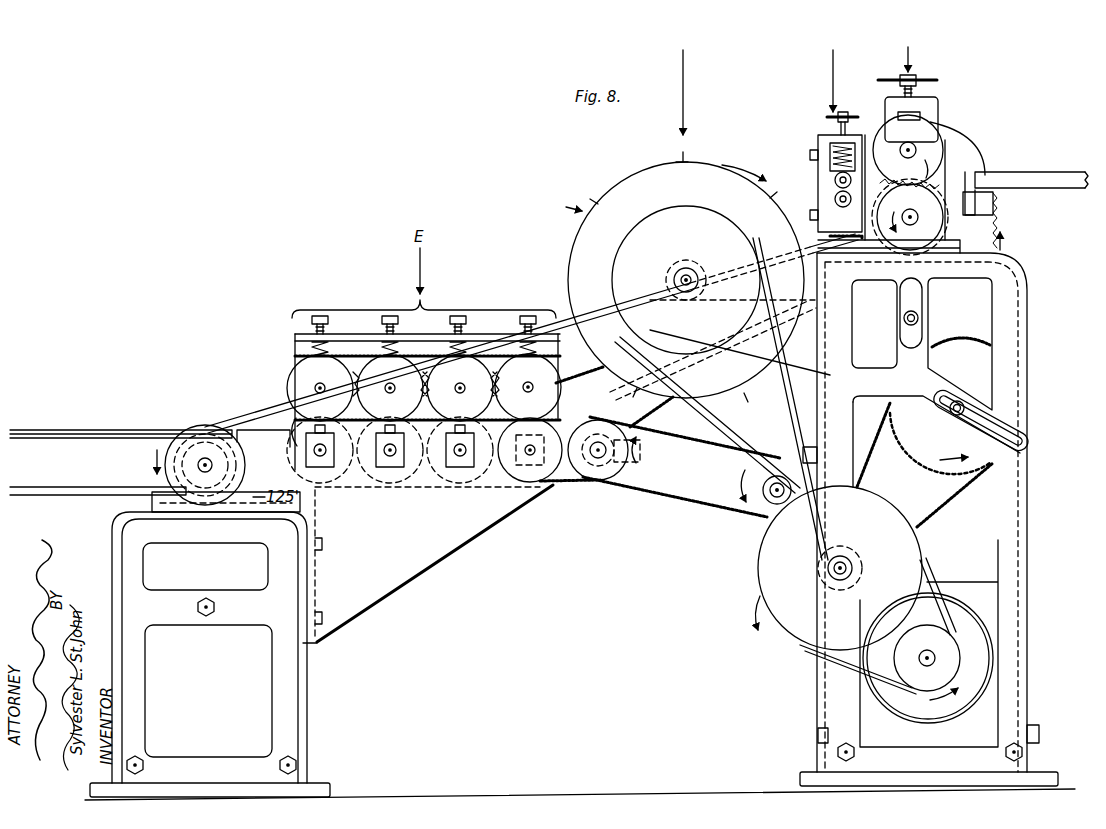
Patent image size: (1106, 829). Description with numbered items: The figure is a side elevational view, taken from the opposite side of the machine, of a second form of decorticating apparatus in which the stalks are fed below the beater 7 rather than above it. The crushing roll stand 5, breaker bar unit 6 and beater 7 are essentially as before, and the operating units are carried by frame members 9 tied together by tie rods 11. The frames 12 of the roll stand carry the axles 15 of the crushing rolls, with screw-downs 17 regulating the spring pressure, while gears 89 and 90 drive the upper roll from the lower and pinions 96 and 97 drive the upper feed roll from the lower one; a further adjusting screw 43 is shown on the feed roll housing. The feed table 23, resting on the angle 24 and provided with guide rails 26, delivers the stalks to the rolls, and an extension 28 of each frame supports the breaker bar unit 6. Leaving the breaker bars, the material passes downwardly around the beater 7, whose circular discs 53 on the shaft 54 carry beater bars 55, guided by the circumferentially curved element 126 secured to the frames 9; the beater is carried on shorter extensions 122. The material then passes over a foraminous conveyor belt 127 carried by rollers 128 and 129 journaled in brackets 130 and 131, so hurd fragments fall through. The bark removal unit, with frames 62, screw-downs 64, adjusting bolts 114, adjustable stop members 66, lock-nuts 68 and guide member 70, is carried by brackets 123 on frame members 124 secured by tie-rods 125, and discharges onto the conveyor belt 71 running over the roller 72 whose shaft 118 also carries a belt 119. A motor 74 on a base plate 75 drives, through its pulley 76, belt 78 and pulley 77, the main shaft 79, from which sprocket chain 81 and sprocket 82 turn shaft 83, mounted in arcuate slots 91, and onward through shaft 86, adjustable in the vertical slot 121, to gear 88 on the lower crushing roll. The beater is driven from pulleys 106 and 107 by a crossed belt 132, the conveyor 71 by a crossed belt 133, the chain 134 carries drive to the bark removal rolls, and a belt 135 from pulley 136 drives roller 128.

The roll stand 5 is at (907, 49).
The breaker bar unit 6 is at (832, 71).
The beater 7 is at (682, 82).
The frame members 9 is at (1015, 533).
The tie rods 11 is at (837, 752).
The frames 12 is at (931, 105).
The axles 15 is at (910, 185).
The screw-downs 17 is at (914, 78).
The feed table 23 is at (1080, 190).
The angle 24 is at (983, 190).
The guide rails 26 is at (1048, 172).
The extension 28 is at (830, 158).
The tension adjusting screw 43 is at (838, 124).
The circular discs 53 is at (637, 178).
The shaft 54 is at (700, 277).
The beater bars 55 is at (707, 408).
The frames 62 is at (295, 348).
The screw-downs 64 is at (292, 312).
The adjustable stop members 66 is at (296, 421).
The lock-nuts 68 is at (372, 472).
The guide member 70 is at (263, 443).
The conveyor belt 71 is at (95, 430).
The roller 72 is at (156, 461).
The motor 74 is at (975, 627).
The base plate 75 is at (819, 733).
The pulley 76 is at (950, 662).
The pulley 77 is at (780, 611).
The belt 78 is at (843, 658).
The main shaft 79 is at (852, 568).
The sprocket chain 81 is at (950, 507).
The sprocket 82 is at (986, 367).
The shaft 83 is at (958, 401).
The shaft 86 is at (920, 318).
The gear 88 is at (995, 205).
The gear 89 is at (884, 226).
The gear 90 is at (940, 135).
The arcuate slots 91 is at (996, 431).
The pinion 96 is at (835, 199).
The pinion 97 is at (835, 180).
The pulley 106 is at (843, 588).
The pulley 107 is at (619, 256).
The adjusting bolts 114 is at (347, 352).
The shaft 118 is at (203, 456).
The belt 119 is at (106, 488).
The vertical slot 121 is at (907, 303).
The extensions 122 is at (776, 300).
The brackets 123 is at (447, 556).
The frame members 124 is at (305, 690).
The tie-rods 125 is at (205, 598).
The circumferentially curved element 126 is at (815, 371).
The foraminous conveyor belt 127 is at (680, 440).
The roller 128 is at (603, 473).
The roller 129 is at (772, 508).
The bracket 130 is at (649, 453).
The bracket 131 is at (775, 457).
The crossed belt 132 is at (789, 414).
The crossed belt 133 is at (257, 412).
The chain 134 is at (587, 380).
The belt 135 is at (569, 483).
The pulley 136 is at (523, 471).